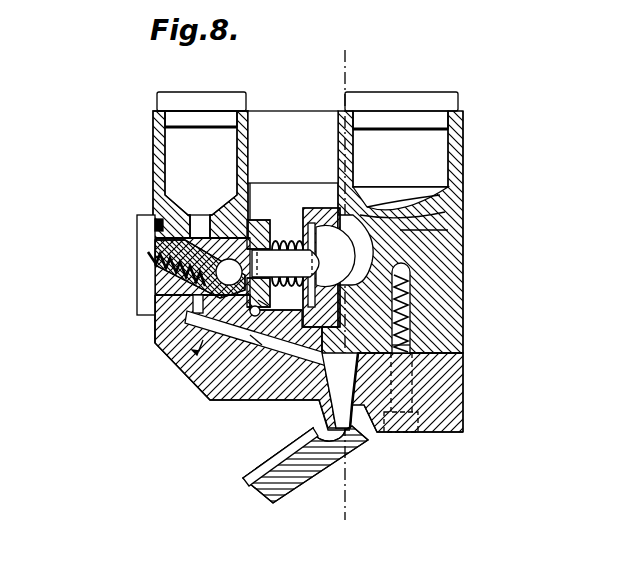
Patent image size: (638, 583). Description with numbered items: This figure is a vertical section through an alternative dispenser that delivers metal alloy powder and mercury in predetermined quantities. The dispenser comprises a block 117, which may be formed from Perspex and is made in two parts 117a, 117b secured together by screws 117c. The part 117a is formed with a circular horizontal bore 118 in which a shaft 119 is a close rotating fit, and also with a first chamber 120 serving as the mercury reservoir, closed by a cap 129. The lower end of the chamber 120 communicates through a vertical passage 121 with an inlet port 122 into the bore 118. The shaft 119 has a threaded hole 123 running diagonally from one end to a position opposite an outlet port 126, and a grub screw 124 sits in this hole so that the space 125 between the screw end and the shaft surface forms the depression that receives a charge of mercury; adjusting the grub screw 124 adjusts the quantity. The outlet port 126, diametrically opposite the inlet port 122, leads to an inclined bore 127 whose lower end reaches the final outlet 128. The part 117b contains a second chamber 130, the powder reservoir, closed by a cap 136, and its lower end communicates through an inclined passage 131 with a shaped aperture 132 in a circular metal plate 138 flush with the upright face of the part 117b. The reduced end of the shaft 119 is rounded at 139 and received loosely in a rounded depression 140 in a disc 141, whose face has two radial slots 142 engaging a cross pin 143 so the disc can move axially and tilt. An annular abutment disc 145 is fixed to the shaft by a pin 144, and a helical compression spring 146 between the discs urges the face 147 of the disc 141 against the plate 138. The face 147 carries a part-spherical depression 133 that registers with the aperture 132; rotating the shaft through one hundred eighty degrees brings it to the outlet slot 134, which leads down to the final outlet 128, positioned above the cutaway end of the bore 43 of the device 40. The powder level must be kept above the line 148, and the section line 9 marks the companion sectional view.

The section line 9 is at (364, 63).
The device 40 is at (260, 493).
The bore 43 is at (310, 456).
The block 117 is at (210, 362).
The block part 117a is at (155, 336).
The block part 117b is at (440, 367).
The screws 117c is at (396, 381).
The horizontal bore 118 is at (222, 218).
The shaft 119 is at (165, 238).
The first chamber 120 is at (168, 157).
The vertical passage 121 is at (214, 218).
The inlet port 122 is at (196, 218).
The threaded hole 123 is at (148, 258).
The grub screw 124 is at (150, 285).
The space 125 is at (186, 318).
The outlet port 126 is at (198, 320).
The inclined bore 127 is at (262, 350).
The final outlet 128 is at (363, 427).
The cap 129 is at (193, 99).
The second chamber 130 is at (442, 140).
The inclined passage 131 is at (395, 213).
The shaped aperture 132 is at (392, 230).
The part-spherical depression 133 is at (445, 243).
The outlet slot 134 is at (408, 322).
The cap 136 is at (398, 101).
The circular metal plate 138 is at (339, 182).
The rounded end 139 is at (345, 284).
The rounded depression 140 is at (352, 258).
The disc 141 is at (313, 208).
The slots 142 is at (398, 296).
The cross pin 143 is at (303, 247).
The pin 144 is at (273, 240).
The annular abutment disc 145 is at (262, 308).
The helical compression spring 146 is at (325, 290).
The face 147 is at (412, 347).
The line 148 is at (383, 207).